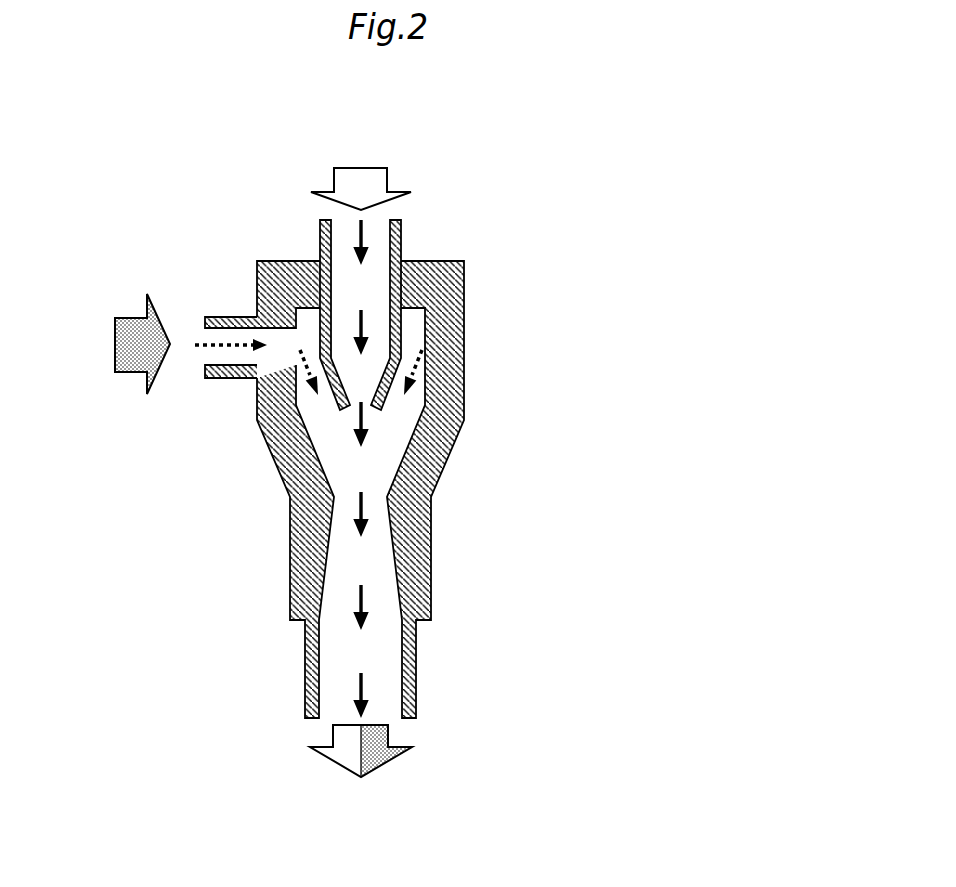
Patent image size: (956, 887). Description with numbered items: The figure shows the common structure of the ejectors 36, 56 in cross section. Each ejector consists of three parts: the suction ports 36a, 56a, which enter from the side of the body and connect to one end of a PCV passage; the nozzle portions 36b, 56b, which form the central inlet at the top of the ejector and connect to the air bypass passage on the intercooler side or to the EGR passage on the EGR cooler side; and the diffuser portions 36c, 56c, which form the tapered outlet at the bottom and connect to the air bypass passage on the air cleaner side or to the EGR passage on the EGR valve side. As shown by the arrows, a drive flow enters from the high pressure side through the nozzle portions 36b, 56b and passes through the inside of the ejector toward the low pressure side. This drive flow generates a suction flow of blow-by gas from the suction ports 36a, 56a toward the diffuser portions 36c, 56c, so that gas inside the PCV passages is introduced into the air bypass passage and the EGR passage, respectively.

The ejector 36 is at (366, 448).
The ejector 56 is at (366, 448).
The suction port 36a is at (202, 387).
The suction port 56a is at (223, 352).
The nozzle portion 36b is at (459, 315).
The nozzle portion 56b is at (357, 378).
The diffuser portion 36c is at (410, 541).
The diffuser portion 56c is at (363, 567).